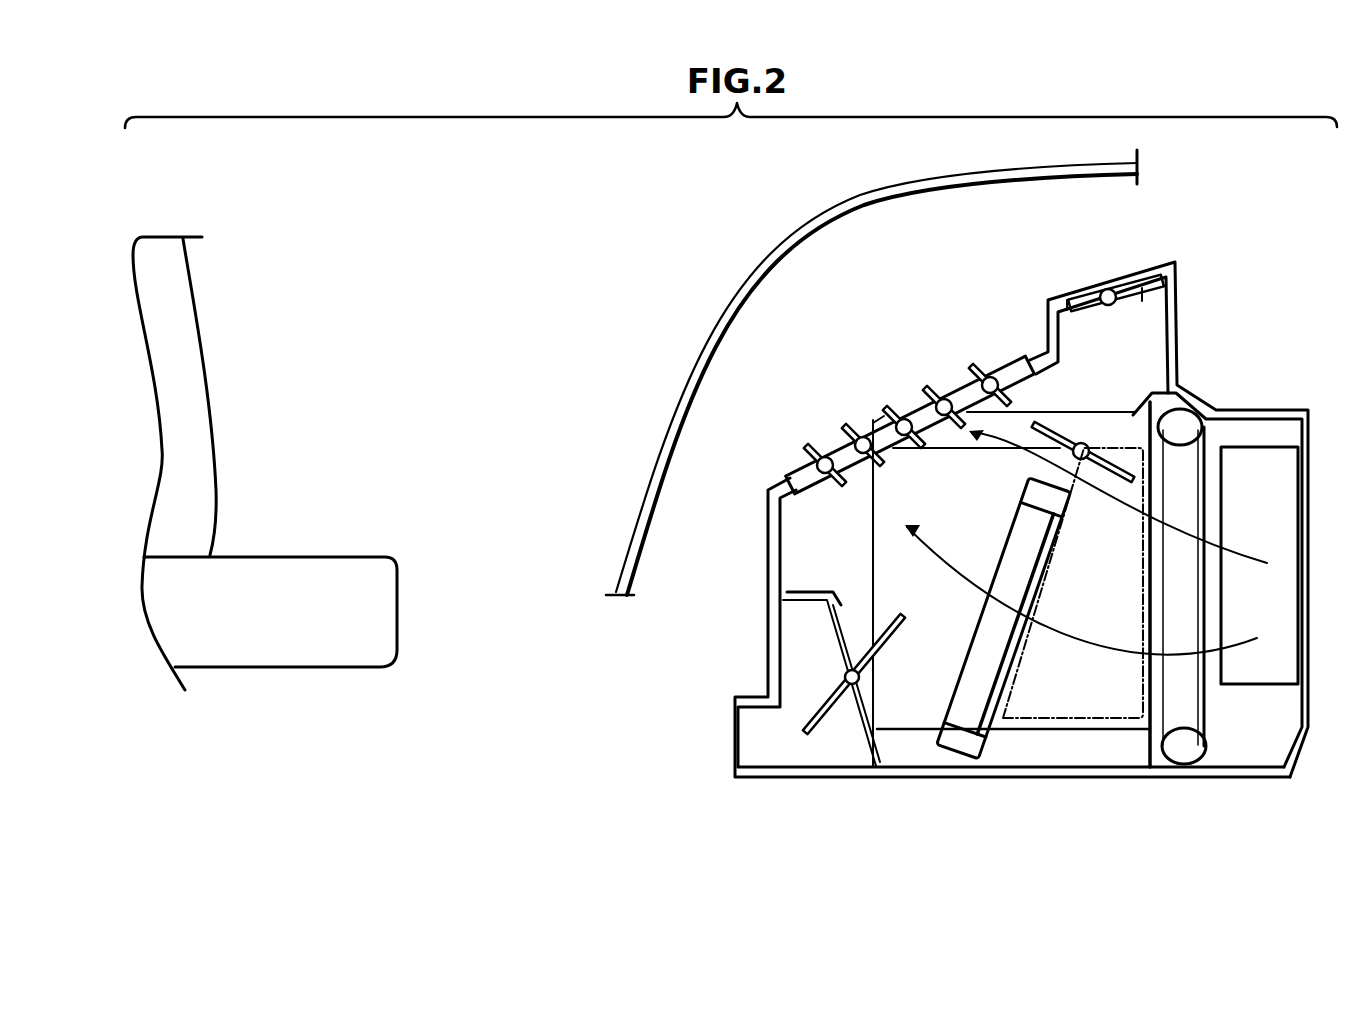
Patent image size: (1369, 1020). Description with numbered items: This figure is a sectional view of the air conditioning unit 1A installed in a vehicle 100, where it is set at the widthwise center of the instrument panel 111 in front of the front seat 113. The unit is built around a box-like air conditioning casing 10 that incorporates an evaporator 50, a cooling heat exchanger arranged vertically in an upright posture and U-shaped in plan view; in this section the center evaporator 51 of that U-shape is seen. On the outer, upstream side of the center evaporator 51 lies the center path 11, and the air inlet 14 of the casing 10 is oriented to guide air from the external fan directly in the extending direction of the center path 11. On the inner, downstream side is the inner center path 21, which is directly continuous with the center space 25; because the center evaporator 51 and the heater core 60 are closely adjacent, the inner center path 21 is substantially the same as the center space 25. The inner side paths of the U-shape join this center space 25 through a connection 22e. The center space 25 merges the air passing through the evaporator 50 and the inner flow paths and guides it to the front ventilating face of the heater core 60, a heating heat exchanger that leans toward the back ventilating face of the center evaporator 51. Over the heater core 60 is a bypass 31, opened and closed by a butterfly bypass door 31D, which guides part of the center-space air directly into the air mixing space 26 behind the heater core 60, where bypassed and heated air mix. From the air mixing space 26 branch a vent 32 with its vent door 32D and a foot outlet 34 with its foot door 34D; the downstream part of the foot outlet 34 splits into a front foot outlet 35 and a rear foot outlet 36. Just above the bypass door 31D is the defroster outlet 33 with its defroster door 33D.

The vehicle 100 is at (541, 234).
The air conditioning unit 1A is at (1195, 193).
The instrument panel 111 is at (748, 280).
The front seat 113 is at (209, 272).
The air conditioning casing 10 is at (1187, 390).
The center path 11 is at (1267, 431).
The air inlet 14 is at (1303, 543).
The inner center path 21 is at (1137, 635).
The connection 22e is at (1087, 729).
The center space 25 is at (1032, 707).
The air mixing space 26 is at (936, 488).
The bypass 31 is at (1108, 426).
The bypass door 31D is at (1055, 428).
The vent 32 is at (954, 400).
The vent door 32D is at (979, 373).
The defroster outlet 33 is at (1137, 280).
The defroster door 33D is at (1090, 296).
The foot outlet 34 is at (863, 747).
The foot door 34D is at (830, 727).
The front foot outlet 35 is at (797, 752).
The rear foot outlet 36 is at (735, 757).
The evaporator 50 is at (1212, 720).
The center evaporator 51 is at (1191, 703).
The heater core 60 is at (930, 753).